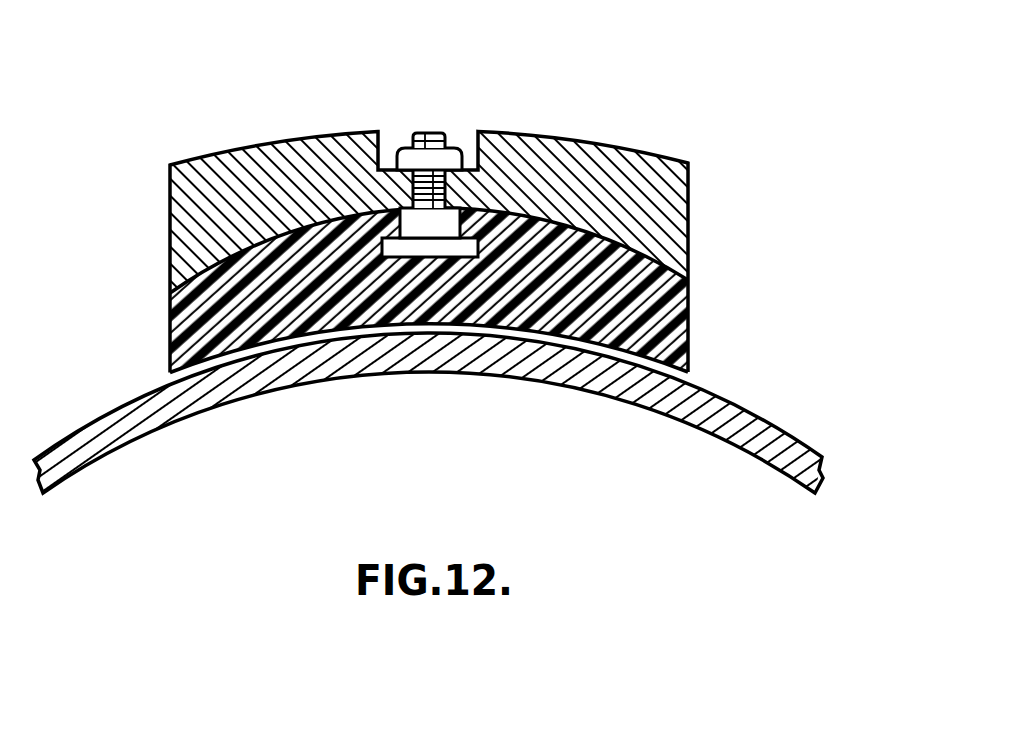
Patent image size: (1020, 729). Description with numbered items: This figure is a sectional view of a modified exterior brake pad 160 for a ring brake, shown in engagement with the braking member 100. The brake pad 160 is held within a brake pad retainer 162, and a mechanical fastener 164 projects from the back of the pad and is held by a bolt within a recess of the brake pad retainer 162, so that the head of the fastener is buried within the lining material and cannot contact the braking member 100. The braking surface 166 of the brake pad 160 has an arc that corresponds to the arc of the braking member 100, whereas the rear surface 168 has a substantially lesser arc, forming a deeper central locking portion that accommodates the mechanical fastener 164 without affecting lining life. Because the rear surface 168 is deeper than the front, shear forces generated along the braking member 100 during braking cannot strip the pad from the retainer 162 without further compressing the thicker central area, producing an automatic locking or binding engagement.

The braking member 100 is at (730, 422).
The exterior brake pad 160 is at (705, 332).
The brake pad retainer 162 is at (702, 223).
The mechanical fastener 164 is at (428, 120).
The braking surface 166 is at (683, 373).
The rear surface 168 is at (662, 284).